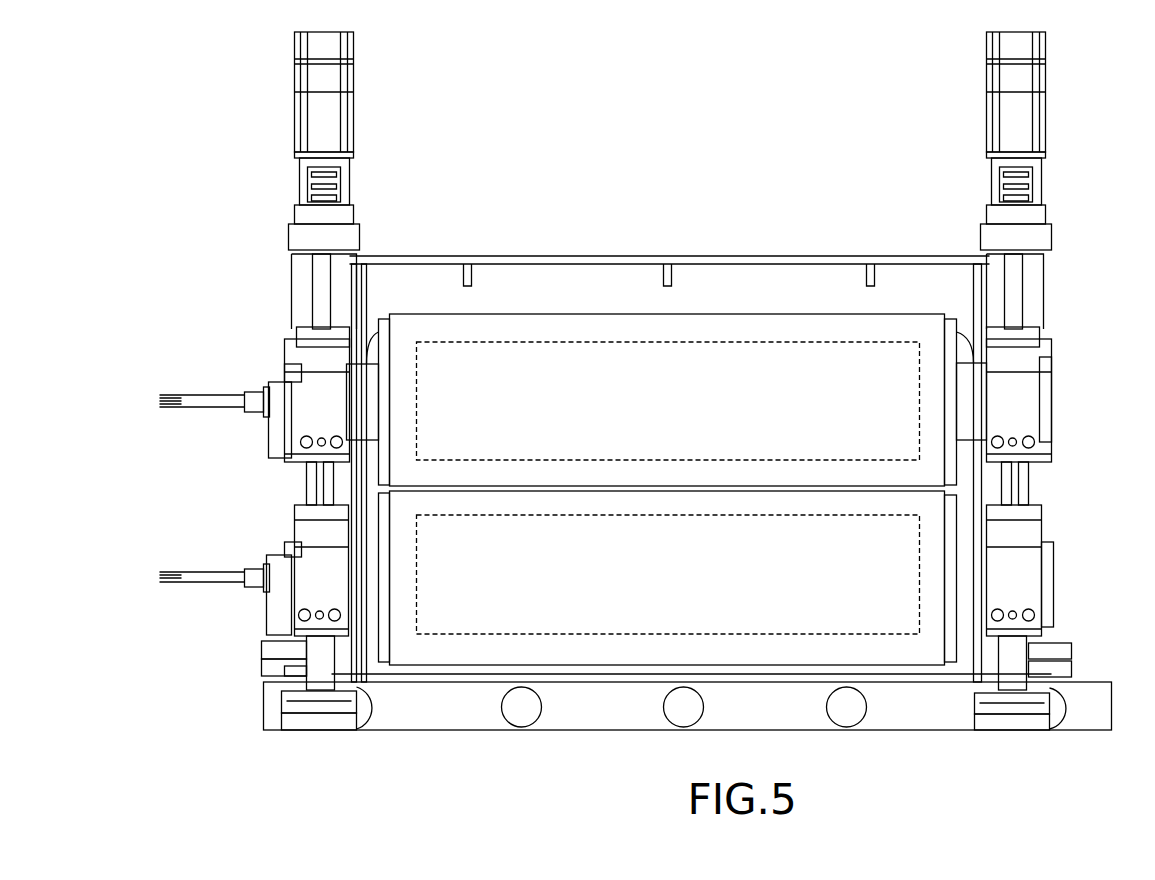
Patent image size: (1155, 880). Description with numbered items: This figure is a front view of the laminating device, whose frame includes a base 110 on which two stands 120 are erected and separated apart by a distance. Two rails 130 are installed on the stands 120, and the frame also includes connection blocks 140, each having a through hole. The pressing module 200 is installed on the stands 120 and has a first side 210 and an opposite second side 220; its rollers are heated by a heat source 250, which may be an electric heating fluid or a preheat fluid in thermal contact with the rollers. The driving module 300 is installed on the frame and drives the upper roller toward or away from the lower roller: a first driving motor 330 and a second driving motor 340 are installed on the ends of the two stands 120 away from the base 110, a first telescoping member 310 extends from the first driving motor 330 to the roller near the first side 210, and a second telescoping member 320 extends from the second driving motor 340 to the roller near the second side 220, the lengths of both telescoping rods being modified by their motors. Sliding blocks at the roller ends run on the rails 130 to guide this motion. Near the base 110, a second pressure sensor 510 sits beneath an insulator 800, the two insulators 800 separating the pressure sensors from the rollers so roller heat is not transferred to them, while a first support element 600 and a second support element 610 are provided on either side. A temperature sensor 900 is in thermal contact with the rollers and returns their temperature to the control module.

The base 110 is at (600, 708).
The stands 120 is at (300, 271).
The rails 130 is at (310, 491).
The connection blocks 140 is at (262, 649).
The pressing module 200 is at (762, 309).
The first side 210 is at (260, 443).
The second side 220 is at (1073, 443).
The heat source 250 is at (826, 336).
The driving module 300 is at (1057, 58).
The first telescoping member 310 is at (318, 307).
The second telescoping member 320 is at (1015, 308).
The first driving motor 330 is at (316, 117).
The second driving motor 340 is at (1020, 120).
The second pressure sensor 510 is at (316, 730).
The first support element 600 is at (290, 667).
The second support element 610 is at (1040, 667).
The insulators 800 is at (270, 718).
The temperature sensor 900 is at (195, 390).